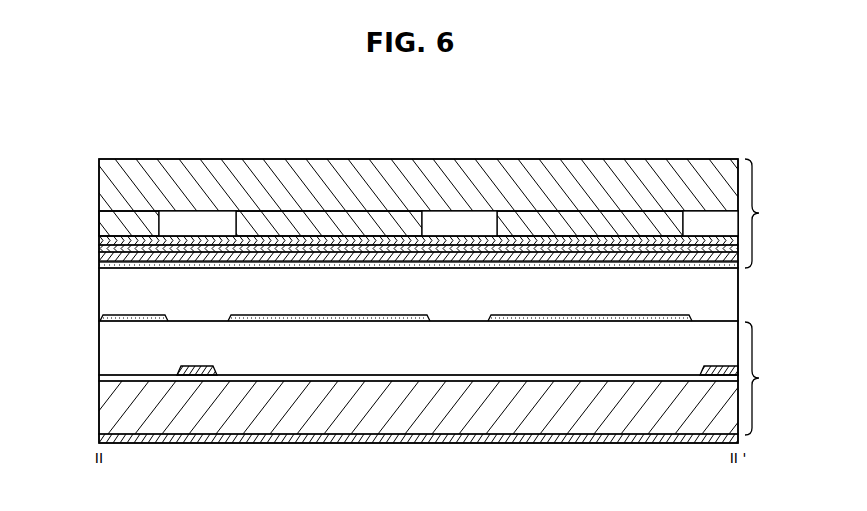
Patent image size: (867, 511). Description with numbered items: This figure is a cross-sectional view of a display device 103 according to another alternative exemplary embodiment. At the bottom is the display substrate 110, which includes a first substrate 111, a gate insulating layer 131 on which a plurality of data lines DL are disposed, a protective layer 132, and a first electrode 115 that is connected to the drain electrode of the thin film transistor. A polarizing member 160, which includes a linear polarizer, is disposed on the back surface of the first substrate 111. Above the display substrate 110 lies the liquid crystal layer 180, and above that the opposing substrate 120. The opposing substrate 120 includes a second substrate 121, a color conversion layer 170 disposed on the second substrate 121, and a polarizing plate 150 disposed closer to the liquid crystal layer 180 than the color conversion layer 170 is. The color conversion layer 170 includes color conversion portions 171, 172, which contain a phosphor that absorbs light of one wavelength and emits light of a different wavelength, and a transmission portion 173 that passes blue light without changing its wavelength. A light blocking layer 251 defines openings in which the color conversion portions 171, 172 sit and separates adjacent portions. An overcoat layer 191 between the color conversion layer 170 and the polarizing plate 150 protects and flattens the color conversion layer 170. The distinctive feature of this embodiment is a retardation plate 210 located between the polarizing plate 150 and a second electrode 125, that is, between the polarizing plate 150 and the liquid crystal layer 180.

The display device 103 is at (110, 110).
The display substrate 110 is at (767, 378).
The first substrate 111 is at (106, 407).
The first electrode 115 is at (106, 320).
The opposing substrate 120 is at (767, 213).
The second substrate 121 is at (384, 186).
The second electrode 125 is at (103, 263).
The gate insulating layer 131 is at (106, 378).
The protective layer 132 is at (106, 348).
The polarizing plate 150 is at (103, 247).
The polarizing member 160 is at (106, 437).
The color conversion layer 170 is at (90, 219).
The color conversion portion 171 is at (333, 231).
The color conversion portion 172 is at (613, 222).
The transmission portion 173 is at (128, 222).
The liquid crystal layer 180 is at (106, 294).
The overcoat layer 191 is at (103, 241).
The retardation plate 210 is at (266, 257).
The light blocking layer 251 is at (194, 218).
The data line DL is at (195, 376).